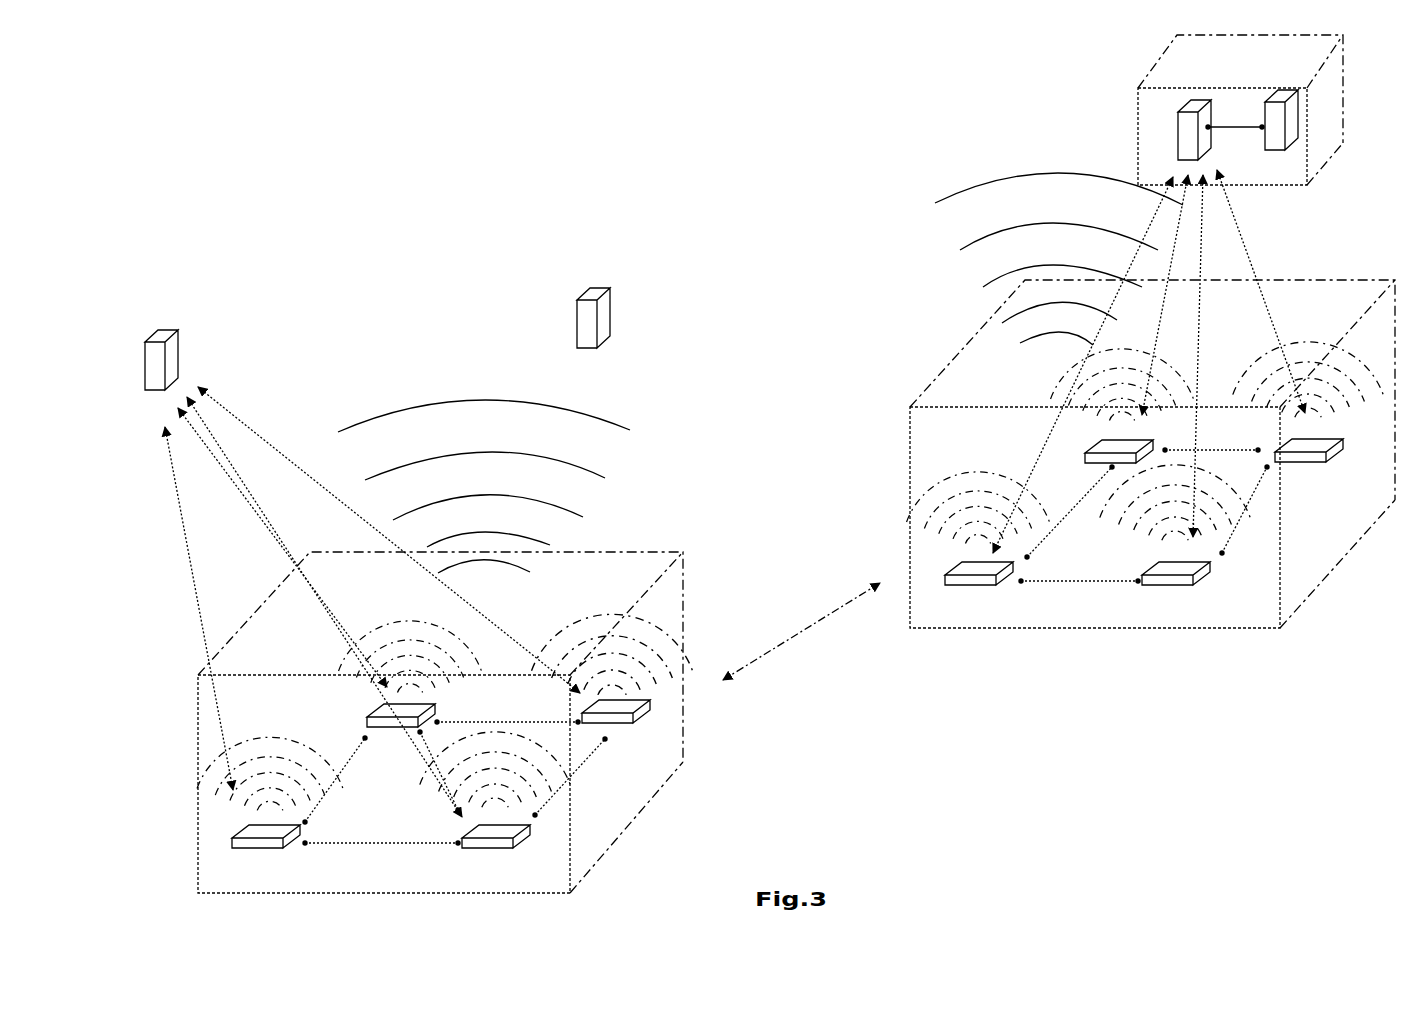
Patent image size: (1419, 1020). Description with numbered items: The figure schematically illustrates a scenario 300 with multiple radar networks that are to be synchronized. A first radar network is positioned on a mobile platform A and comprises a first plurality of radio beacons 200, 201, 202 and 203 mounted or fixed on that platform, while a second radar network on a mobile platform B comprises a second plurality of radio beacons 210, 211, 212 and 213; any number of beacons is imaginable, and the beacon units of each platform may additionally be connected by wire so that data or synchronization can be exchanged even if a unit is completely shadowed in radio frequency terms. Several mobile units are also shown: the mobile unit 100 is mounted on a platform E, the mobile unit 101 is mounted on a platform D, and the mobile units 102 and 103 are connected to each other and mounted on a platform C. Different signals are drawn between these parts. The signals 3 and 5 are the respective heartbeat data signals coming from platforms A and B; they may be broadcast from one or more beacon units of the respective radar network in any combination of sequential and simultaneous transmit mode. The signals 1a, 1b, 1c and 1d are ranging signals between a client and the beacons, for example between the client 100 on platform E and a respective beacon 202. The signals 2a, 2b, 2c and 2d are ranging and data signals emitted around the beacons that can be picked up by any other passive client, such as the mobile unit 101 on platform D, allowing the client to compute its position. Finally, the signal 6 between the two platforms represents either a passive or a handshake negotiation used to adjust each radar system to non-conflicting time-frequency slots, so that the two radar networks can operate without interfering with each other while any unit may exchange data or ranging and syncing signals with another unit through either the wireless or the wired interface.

The communication system 300 is at (450, 174).
The mobile unit 100 is at (158, 344).
The mobile unit 101 is at (598, 302).
The mobile unit 102 is at (1164, 130).
The mobile unit 103 is at (1310, 120).
The radio beacon 200 is at (266, 851).
The radio beacon 201 is at (496, 851).
The radio beacon 202 is at (401, 732).
The radio beacon 203 is at (627, 726).
The radio beacon 210 is at (979, 588).
The radio beacon 211 is at (1176, 587).
The radio beacon 212 is at (1093, 455).
The radio beacon 213 is at (1309, 463).
The ranging signal 1a is at (190, 608).
The ranging signal 1b is at (282, 547).
The ranging signal 1c is at (324, 607).
The ranging signal 1d is at (389, 540).
The ranging and data signal 2a is at (270, 757).
The ranging and data signal 2b is at (495, 769).
The ranging and data signal 2c is at (410, 641).
The ranging and data signal 2d is at (612, 640).
The heartbeat signal 3 is at (484, 486).
The heartbeat signal 5 is at (1059, 259).
The negotiation signal 6 is at (801, 631).